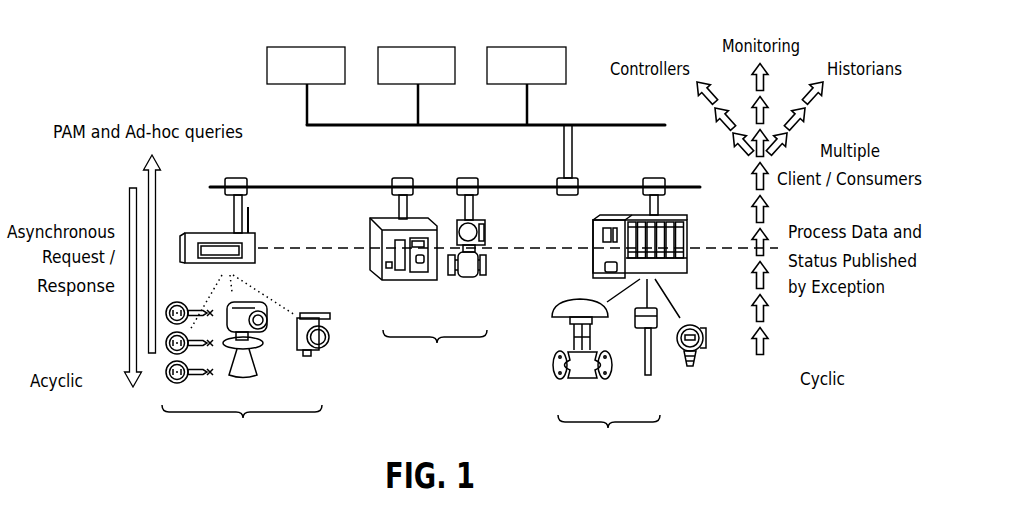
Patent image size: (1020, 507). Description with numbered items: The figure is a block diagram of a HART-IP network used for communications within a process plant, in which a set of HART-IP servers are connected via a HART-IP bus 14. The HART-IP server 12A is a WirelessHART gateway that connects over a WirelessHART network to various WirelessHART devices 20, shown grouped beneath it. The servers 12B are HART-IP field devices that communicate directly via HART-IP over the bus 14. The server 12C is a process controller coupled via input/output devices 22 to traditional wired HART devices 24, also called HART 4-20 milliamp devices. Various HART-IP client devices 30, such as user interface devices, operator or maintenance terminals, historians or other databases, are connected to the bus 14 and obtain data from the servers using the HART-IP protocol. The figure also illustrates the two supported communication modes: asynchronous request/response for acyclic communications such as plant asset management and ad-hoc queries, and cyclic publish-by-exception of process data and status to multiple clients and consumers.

The HART-IP client devices 30 is at (300, 47).
The HART-IP bus 14 is at (317, 186).
The HART-IP server (WirelessHART gateway) 12A is at (257, 243).
The HART-IP field devices 12B is at (428, 293).
The process controller 12C is at (593, 226).
The input/output (I/O) devices 22 is at (690, 250).
The WirelessHART devices 20 is at (246, 372).
The traditional wired HART devices 24 is at (629, 367).